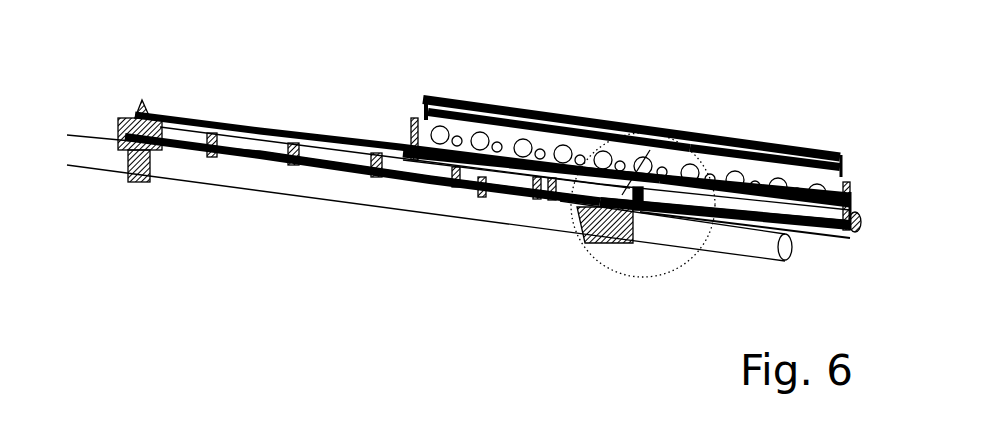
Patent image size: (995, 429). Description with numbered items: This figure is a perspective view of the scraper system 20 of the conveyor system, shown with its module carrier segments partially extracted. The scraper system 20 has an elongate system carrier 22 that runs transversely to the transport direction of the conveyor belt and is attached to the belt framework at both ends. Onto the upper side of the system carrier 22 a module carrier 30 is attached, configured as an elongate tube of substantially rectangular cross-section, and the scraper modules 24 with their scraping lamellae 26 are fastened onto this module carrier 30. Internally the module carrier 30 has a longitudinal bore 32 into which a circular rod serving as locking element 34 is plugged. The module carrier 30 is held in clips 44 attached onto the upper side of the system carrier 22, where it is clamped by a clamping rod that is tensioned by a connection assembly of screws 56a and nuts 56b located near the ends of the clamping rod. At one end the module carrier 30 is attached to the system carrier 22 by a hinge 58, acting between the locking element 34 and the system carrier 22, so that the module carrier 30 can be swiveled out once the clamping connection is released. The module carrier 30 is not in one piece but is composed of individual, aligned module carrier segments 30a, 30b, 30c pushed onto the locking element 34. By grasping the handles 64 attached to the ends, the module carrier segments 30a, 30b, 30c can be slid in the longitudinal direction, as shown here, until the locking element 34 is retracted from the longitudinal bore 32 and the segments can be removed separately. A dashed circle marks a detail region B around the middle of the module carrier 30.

The scraper system 20 is at (233, 223).
The system carrier 22 is at (530, 218).
The scraper modules 24 is at (802, 185).
The scraping lamellae 26 is at (565, 117).
The module carrier 30 is at (575, 75).
The module carrier segment 30a is at (822, 225).
The module carrier segment 30b is at (593, 190).
The module carrier segment 30c is at (478, 177).
The longitudinal bore 32 is at (860, 222).
The locking element 34 is at (260, 143).
The clips 44 is at (385, 178).
The screws 56a is at (140, 103).
The nuts 56b is at (175, 79).
The hinge 58 is at (125, 128).
The handles 64 is at (412, 128).
The detail circle B is at (683, 265).